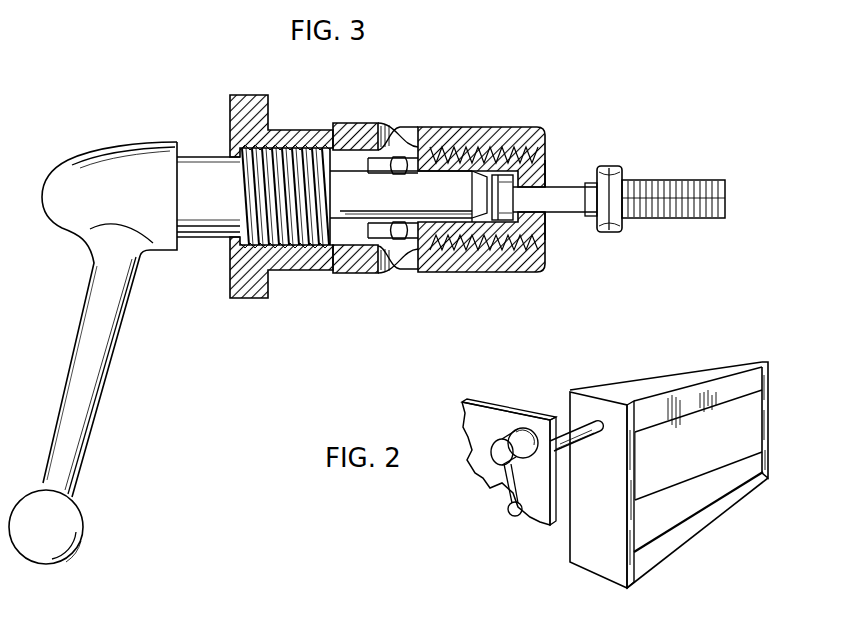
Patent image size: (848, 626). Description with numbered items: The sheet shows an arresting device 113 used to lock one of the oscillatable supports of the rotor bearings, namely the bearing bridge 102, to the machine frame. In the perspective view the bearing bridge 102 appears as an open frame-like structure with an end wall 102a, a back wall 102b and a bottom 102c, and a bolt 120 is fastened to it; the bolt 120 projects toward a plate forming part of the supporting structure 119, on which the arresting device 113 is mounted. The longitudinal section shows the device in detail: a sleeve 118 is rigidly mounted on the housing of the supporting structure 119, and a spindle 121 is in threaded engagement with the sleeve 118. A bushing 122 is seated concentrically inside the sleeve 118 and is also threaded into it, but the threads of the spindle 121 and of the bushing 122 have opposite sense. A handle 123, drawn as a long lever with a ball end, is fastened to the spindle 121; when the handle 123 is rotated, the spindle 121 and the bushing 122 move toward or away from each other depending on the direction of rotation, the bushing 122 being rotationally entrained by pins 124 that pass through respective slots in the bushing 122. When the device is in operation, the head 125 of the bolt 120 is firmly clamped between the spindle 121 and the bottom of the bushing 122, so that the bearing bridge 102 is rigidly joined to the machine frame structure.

In FIG. 2, the bearing bridge 102 is at (673, 388).
In FIG. 2, the end wall of frame 102a is at (577, 537).
In FIG. 2, the back wall of frame 102b is at (725, 435).
In FIG. 2, the bottom wall of frame 102c is at (699, 519).
In FIG. 2, the arresting device 113 is at (512, 431).
In FIG. 3, the sleeve 118 is at (470, 132).
In FIG. 2, the supporting structure 119 is at (540, 428).
In FIG. 3, the bolt 120 is at (657, 182).
In FIG. 2, the bolt 120 is at (585, 420).
In FIG. 3, the spindle 121 is at (293, 143).
In FIG. 3, the bushing 122 is at (546, 236).
In FIG. 3, the handle 123 is at (112, 321).
In FIG. 3, the pins 124 is at (399, 156).
In FIG. 3, the head of bolt 125 is at (505, 185).